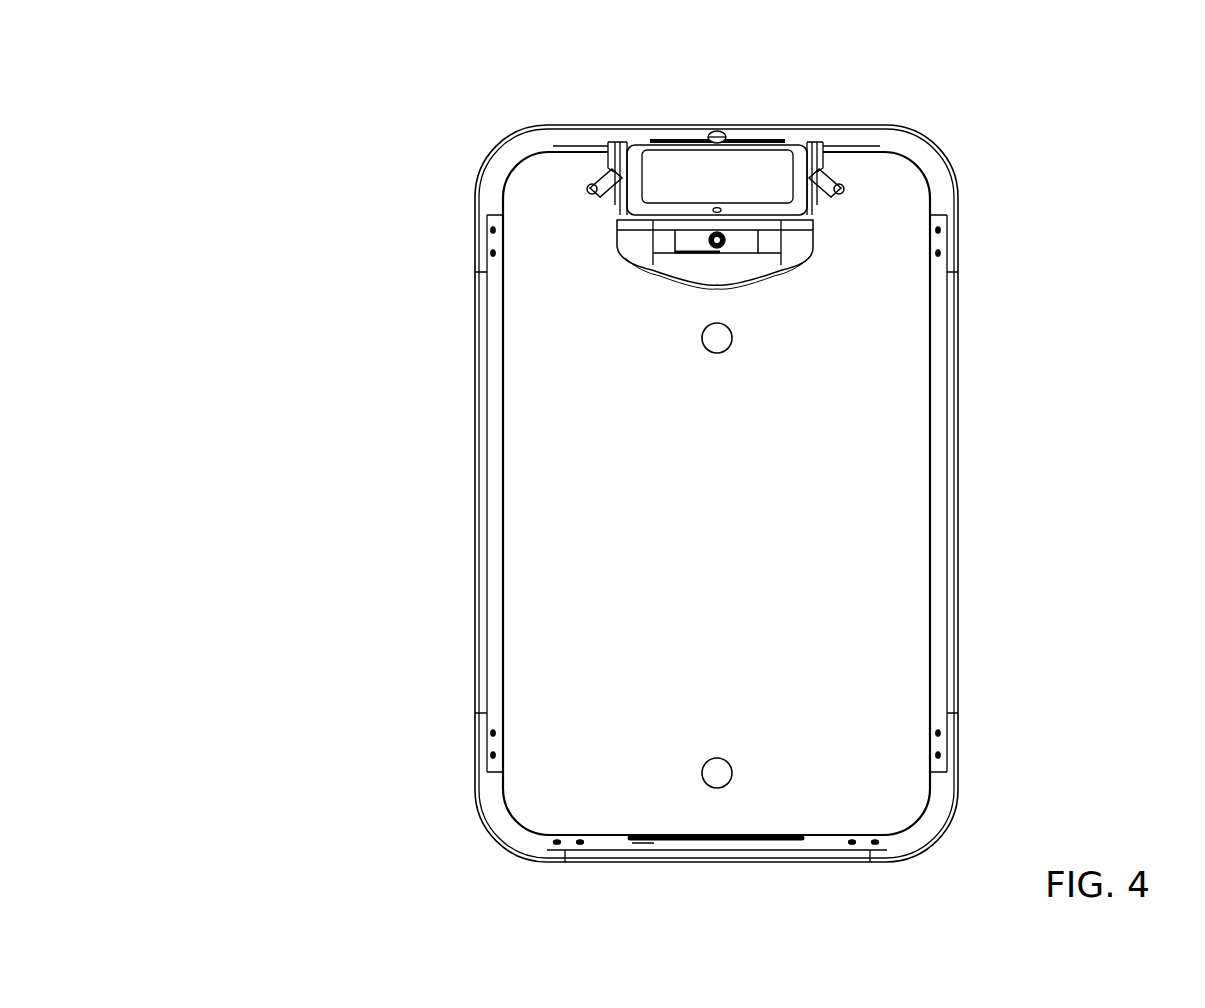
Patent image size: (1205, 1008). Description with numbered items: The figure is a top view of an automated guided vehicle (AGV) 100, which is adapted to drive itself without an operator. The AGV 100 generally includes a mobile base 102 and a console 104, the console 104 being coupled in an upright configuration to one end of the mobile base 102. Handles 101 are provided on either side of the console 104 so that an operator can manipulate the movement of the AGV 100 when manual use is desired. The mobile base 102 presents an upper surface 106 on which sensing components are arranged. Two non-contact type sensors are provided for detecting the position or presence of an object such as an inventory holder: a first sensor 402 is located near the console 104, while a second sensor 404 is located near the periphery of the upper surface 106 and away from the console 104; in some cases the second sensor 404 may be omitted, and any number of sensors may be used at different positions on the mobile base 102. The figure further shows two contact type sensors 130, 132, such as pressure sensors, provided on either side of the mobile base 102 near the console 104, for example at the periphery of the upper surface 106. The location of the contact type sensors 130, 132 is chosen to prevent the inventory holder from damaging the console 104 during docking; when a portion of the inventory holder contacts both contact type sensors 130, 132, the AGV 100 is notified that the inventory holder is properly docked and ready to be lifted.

The automated guided vehicle 100 is at (315, 83).
The handles 101 is at (590, 186).
The mobile base 102 is at (1020, 436).
The console 104 is at (727, 118).
The upper surface 106 is at (553, 528).
The contact type sensor 130 is at (492, 212).
The contact type sensor 132 is at (940, 214).
The first sensor 402 is at (709, 352).
The second sensor 404 is at (708, 759).